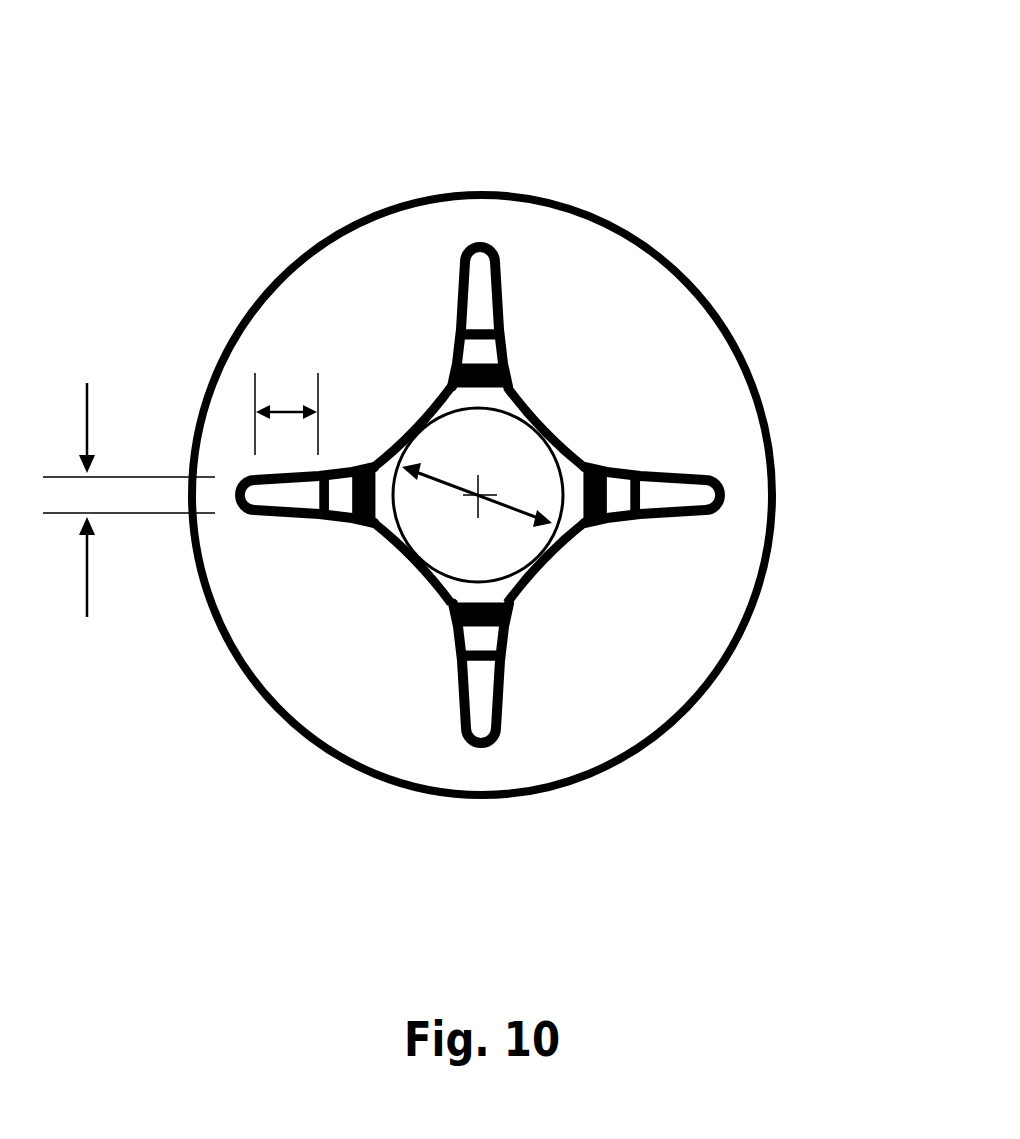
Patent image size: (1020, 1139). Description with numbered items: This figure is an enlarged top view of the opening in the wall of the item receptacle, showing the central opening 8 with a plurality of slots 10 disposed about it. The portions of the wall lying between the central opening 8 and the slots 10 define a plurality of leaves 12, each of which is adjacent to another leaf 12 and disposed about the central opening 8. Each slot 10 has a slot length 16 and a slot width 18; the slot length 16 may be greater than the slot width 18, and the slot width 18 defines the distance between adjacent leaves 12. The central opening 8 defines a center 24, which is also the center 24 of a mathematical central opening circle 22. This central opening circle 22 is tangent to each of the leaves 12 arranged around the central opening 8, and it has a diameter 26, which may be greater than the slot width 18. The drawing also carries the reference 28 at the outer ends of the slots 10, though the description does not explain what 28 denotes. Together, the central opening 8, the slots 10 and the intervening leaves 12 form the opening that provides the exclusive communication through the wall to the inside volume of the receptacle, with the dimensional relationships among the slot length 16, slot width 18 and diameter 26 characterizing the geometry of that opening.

The central opening 8 is at (480, 428).
The slot 10 is at (470, 278).
The leaf 12 is at (575, 365).
The slot length 16 is at (287, 405).
The slot width 18 is at (129, 483).
The central opening circle 22 is at (498, 580).
The center 24 is at (478, 495).
The diameter 26 is at (446, 492).
The arm tip 28 is at (727, 493).